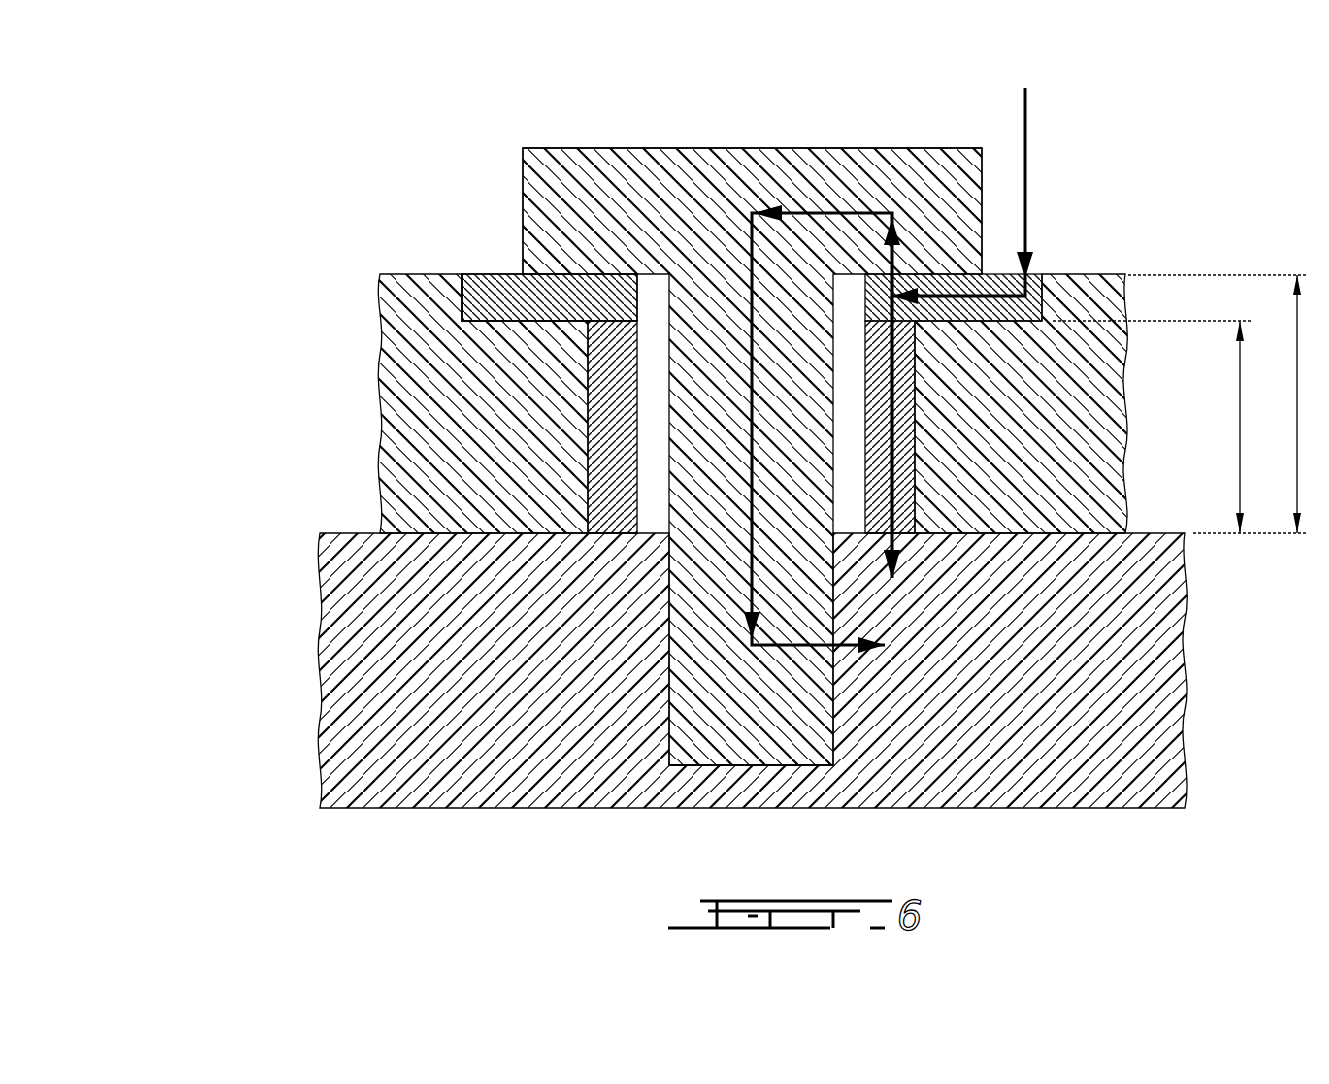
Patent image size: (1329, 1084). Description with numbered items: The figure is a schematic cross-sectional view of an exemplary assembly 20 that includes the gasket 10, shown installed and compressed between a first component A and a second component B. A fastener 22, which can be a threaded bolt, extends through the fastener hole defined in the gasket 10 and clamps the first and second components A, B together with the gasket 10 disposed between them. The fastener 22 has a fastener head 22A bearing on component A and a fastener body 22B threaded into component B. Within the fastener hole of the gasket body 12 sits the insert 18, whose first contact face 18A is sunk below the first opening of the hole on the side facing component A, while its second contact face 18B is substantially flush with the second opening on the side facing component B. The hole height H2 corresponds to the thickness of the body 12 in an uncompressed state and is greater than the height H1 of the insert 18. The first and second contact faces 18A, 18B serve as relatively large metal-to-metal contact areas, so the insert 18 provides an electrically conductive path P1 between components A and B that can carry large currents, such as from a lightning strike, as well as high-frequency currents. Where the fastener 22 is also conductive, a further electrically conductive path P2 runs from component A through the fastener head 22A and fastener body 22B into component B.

The assembly 20 is at (278, 146).
The gasket 10 is at (313, 295).
The body 12 is at (412, 300).
The first component A is at (492, 285).
The fastener 22 is at (752, 464).
The fastener head 22A is at (572, 170).
The fastener body 22B is at (757, 740).
The insert 18 is at (664, 403).
The first contact face 18A is at (588, 338).
The second contact face 18B is at (588, 518).
The second component B is at (375, 662).
The electrically conductive path P1 is at (912, 432).
The electrically conductive path P2 is at (848, 212).
The height of insert H1 is at (1158, 427).
The hole height H2 is at (1225, 404).